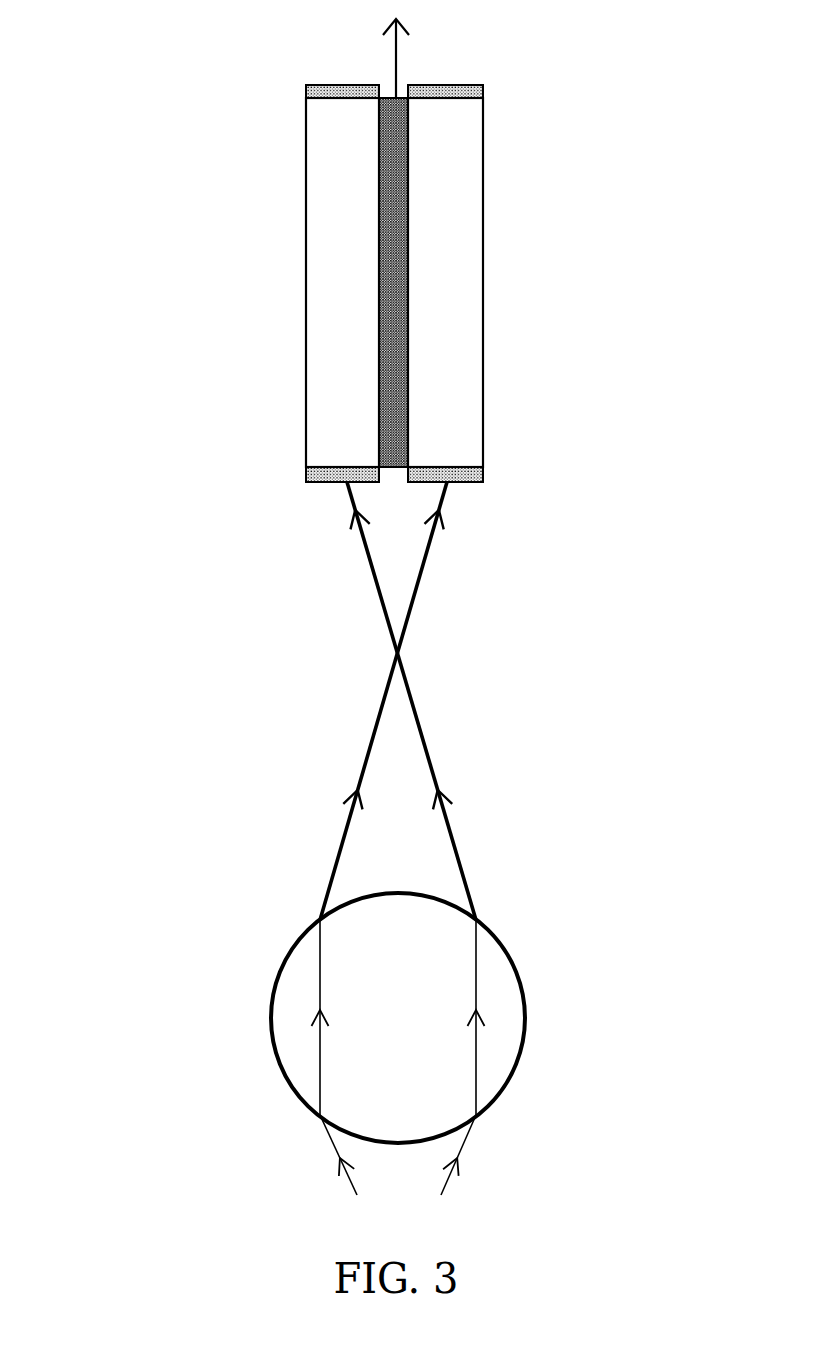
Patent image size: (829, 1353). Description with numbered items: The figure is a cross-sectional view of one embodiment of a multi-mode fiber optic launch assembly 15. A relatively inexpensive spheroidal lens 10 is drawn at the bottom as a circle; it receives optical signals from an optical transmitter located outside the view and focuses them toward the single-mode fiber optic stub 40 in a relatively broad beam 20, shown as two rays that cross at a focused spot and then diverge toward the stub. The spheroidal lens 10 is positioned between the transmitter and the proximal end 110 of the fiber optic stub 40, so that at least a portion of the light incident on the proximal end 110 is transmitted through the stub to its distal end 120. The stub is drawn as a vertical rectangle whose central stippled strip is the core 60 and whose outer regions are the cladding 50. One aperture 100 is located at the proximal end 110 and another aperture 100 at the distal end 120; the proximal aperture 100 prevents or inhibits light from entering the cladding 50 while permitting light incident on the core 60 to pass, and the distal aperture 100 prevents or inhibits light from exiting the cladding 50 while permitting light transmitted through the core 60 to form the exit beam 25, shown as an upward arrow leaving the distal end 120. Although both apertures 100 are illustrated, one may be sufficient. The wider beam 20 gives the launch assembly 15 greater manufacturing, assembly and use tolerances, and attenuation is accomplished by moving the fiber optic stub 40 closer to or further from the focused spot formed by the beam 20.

The spheroidal lens 10 is at (508, 990).
The launch assembly 15 is at (130, 1053).
The beam 20 is at (424, 737).
The exit beam 25 is at (395, 49).
The single-mode fiber optic stub 40 is at (550, 232).
The cladding 50 is at (462, 142).
The core 60 is at (380, 302).
The aperture 100 is at (445, 88).
The proximal end 110 is at (258, 508).
The distal end 120 is at (268, 100).